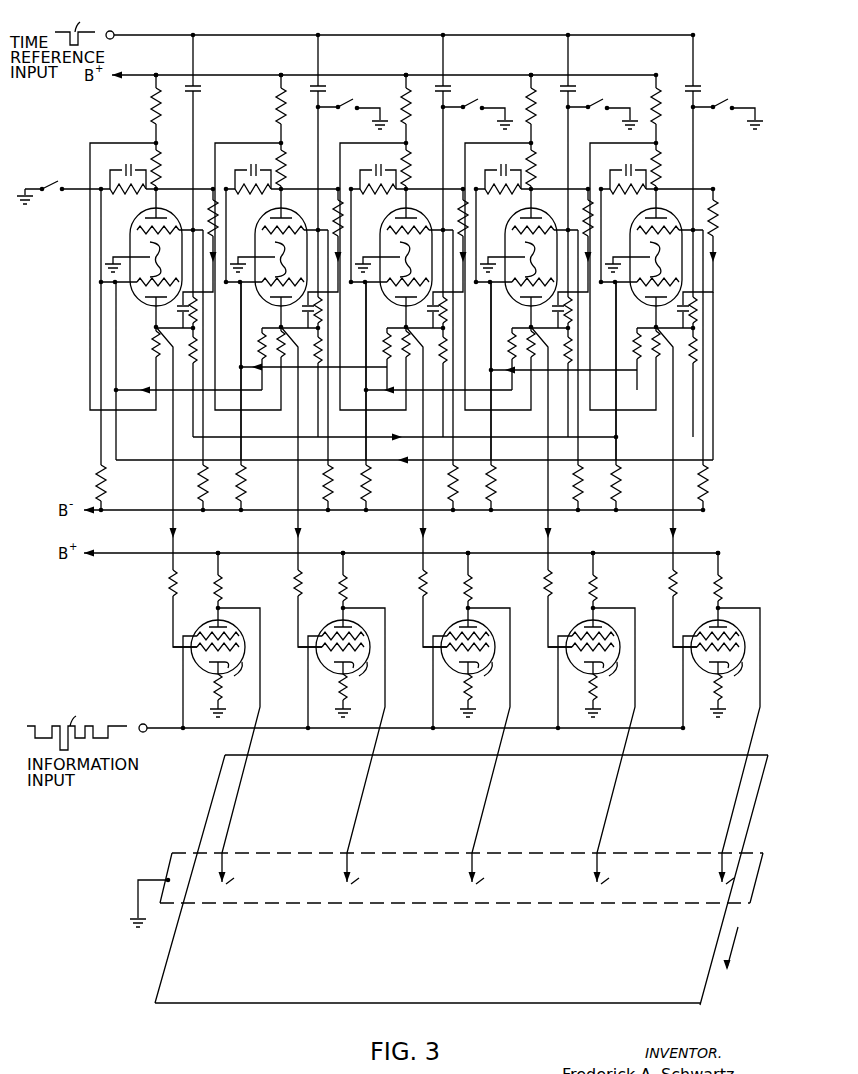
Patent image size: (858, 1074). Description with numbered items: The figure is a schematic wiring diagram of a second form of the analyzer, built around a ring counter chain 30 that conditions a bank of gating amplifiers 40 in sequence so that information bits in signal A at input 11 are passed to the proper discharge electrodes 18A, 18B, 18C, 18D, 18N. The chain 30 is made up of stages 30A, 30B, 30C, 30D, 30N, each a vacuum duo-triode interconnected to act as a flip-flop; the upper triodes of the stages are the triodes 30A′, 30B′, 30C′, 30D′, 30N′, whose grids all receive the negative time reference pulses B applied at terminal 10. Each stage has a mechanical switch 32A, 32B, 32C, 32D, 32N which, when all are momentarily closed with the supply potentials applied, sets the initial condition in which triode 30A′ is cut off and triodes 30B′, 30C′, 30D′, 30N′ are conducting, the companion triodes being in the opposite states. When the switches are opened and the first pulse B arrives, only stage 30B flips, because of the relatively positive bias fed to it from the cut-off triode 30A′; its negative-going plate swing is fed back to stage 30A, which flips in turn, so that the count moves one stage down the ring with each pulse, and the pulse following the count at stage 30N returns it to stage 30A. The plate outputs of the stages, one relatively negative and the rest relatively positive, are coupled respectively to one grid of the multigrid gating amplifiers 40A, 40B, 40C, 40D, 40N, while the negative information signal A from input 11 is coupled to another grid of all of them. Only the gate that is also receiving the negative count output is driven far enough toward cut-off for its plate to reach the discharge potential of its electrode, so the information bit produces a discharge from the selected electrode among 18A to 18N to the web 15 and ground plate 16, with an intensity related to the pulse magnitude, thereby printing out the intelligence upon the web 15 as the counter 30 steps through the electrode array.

The terminal 10 is at (113, 40).
The input 11 is at (131, 748).
The web 15 is at (162, 968).
The ground plate 16 is at (184, 858).
The discharge electrode 18A is at (242, 872).
The discharge electrode 18B is at (367, 872).
The discharge electrode 18C is at (492, 872).
The discharge electrode 18D is at (617, 872).
The discharge electrode 18N is at (705, 872).
The ring counter chain 30 is at (84, 257).
The counter chain stage 30A is at (179, 219).
The counter chain stage 30B is at (304, 219).
The counter chain stage 30C is at (429, 219).
The counter chain stage 30D is at (554, 219).
The counter chain stage 30N is at (679, 219).
The triode 30A′ is at (157, 187).
The triode 30B′ is at (282, 187).
The triode 30C′ is at (407, 187).
The triode 30D′ is at (532, 187).
The triode 30N′ is at (657, 187).
The mechanical switch 32A is at (58, 183).
The mechanical switch 32B is at (352, 107).
The mechanical switch 32C is at (477, 107).
The mechanical switch 32D is at (602, 107).
The mechanical switch 32N is at (727, 107).
The bank of gating amplifiers 40 is at (160, 647).
The gating amplifier 40A is at (216, 702).
The gating amplifier 40B is at (341, 702).
The gating amplifier 40C is at (466, 702).
The gating amplifier 40D is at (591, 702).
The gating amplifier 40N is at (716, 702).